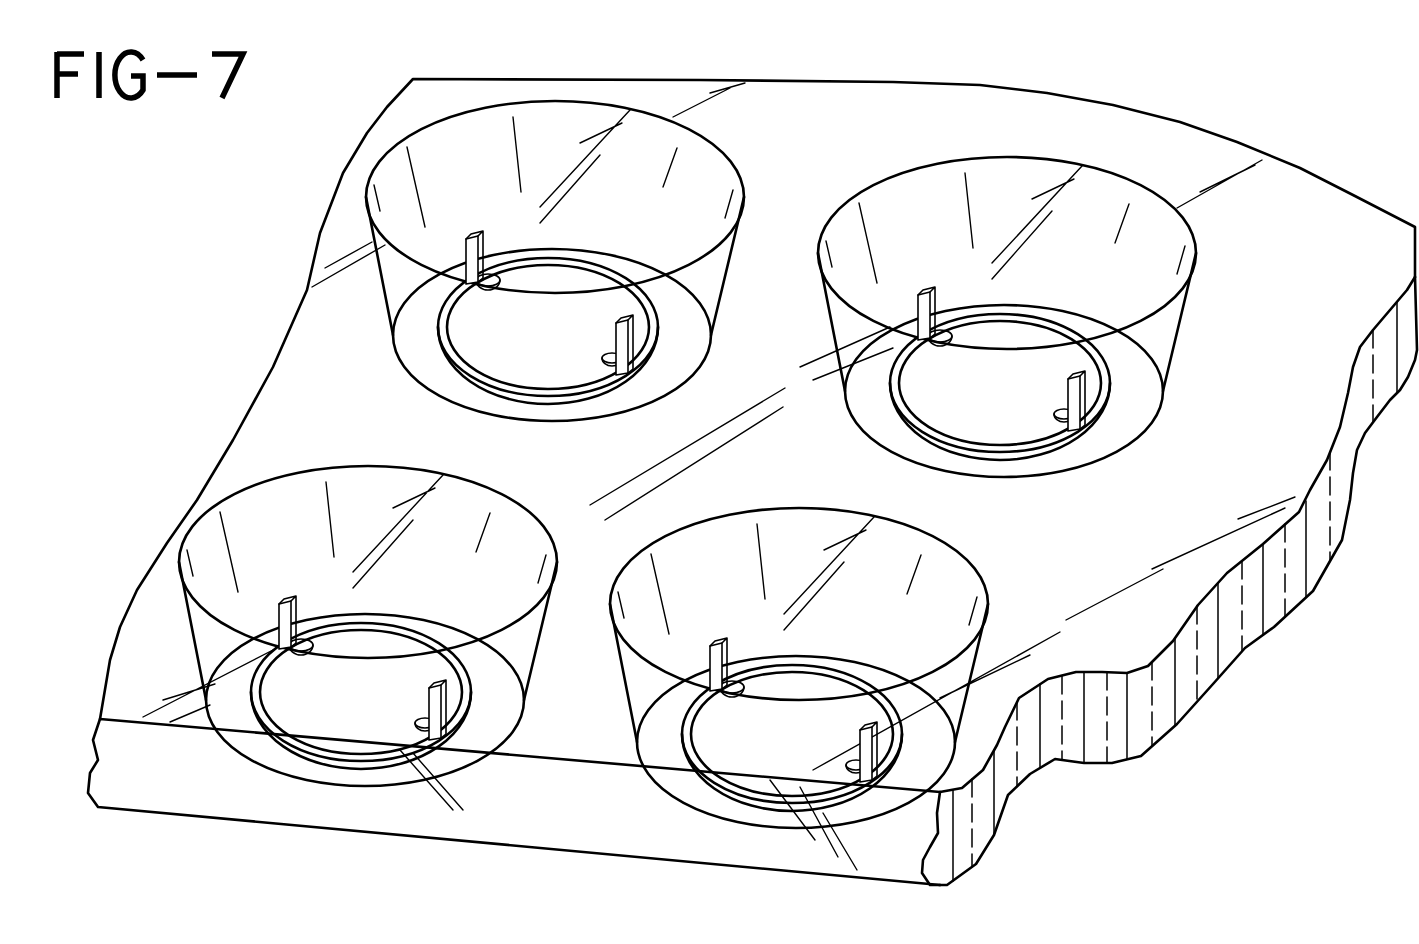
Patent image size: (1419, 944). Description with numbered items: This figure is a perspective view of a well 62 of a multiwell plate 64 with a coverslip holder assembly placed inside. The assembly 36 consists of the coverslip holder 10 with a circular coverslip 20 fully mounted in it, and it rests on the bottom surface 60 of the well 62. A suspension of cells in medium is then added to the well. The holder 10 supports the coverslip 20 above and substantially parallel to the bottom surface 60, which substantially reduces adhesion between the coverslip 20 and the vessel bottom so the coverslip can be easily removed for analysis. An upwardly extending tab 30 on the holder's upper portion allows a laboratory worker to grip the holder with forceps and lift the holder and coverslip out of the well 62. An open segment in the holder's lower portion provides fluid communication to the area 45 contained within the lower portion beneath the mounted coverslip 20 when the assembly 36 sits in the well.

The coverslip holder 10 is at (927, 293).
The coverslip 20 is at (1010, 360).
The tab 30 is at (360, 723).
The assembly 36 is at (295, 740).
The area 45 is at (290, 641).
The bottom surface 60 is at (390, 620).
The well 62 is at (396, 515).
The multiwell plate 64 is at (1132, 707).